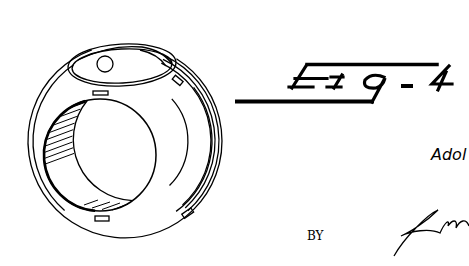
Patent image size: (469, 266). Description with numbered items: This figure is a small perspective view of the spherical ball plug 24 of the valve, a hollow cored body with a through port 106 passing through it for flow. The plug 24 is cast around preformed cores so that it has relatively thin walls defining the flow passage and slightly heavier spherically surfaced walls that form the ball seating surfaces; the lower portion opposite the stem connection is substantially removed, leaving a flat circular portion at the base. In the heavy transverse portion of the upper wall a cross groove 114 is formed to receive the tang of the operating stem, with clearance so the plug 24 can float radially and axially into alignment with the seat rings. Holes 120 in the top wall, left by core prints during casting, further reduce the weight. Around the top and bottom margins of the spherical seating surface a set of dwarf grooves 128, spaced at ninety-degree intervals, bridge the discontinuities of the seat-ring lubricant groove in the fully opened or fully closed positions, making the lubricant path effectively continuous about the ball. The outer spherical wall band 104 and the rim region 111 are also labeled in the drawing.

The plug 24 is at (216, 78).
The housing wall 104 is at (217, 154).
The through port 106 is at (59, 212).
The cap rim 111 is at (76, 60).
The cross groove 114 is at (147, 48).
The holes 120 is at (106, 58).
The dwarf grooves 128 is at (181, 78).